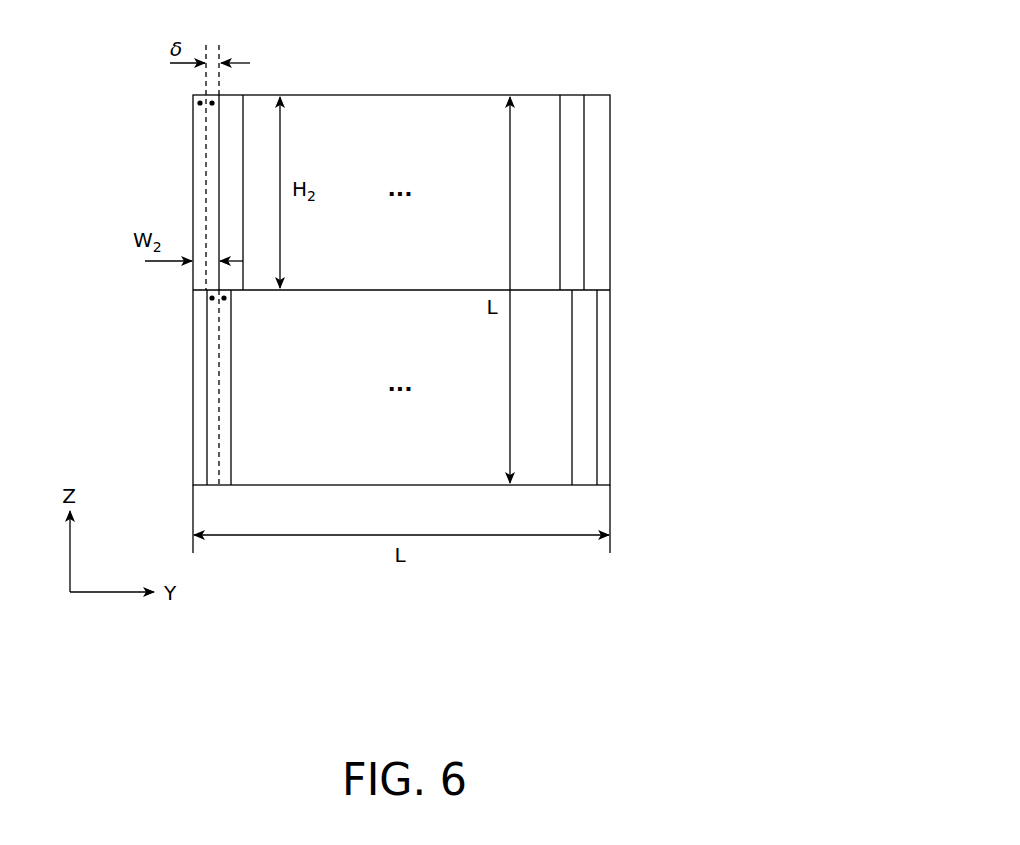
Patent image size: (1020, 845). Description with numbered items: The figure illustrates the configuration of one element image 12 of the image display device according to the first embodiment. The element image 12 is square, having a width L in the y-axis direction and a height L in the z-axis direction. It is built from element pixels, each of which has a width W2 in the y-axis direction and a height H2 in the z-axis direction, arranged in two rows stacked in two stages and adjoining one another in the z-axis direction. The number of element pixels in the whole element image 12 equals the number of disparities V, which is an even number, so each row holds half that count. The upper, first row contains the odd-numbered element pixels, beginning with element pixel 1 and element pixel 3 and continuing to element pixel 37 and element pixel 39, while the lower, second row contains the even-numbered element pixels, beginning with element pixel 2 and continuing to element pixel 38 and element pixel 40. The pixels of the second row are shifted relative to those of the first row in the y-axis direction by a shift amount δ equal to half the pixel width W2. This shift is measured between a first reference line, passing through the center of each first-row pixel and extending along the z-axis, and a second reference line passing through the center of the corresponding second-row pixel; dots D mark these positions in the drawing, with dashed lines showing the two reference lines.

The element pixel 1 is at (200, 152).
The element pixel 2 is at (213, 362).
The element pixel 3 is at (232, 100).
The element image 12 is at (450, 95).
The element pixel 37 is at (570, 105).
The element pixel 38 is at (587, 353).
The element pixel 39 is at (600, 115).
The element pixel 40 is at (603, 415).
The dot D is at (193, 100).